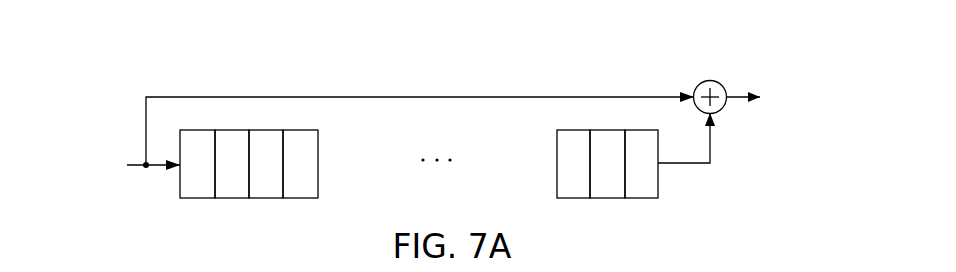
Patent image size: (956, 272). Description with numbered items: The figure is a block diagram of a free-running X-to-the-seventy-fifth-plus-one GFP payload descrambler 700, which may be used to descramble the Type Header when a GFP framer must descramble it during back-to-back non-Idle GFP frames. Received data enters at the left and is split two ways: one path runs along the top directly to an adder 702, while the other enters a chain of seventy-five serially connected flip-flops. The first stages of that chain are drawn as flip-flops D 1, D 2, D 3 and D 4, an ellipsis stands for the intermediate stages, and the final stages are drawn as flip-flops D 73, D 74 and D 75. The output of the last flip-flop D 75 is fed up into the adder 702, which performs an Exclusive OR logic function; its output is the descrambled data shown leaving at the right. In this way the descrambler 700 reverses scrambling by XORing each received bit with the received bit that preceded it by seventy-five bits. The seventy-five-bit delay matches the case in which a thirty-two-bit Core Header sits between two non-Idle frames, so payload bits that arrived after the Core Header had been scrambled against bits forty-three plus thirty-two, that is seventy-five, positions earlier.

The GFP payload descrambler 700 is at (148, 57).
The adder 702 is at (711, 81).
The flip-flop D1 1 is at (197, 164).
The flip-flop D2 2 is at (232, 164).
The flip-flop D3 3 is at (266, 164).
The flip-flop D4 4 is at (300, 164).
The flip-flop D73 73 is at (573, 164).
The flip-flop D74 74 is at (607, 164).
The flip-flop D75 75 is at (641, 164).